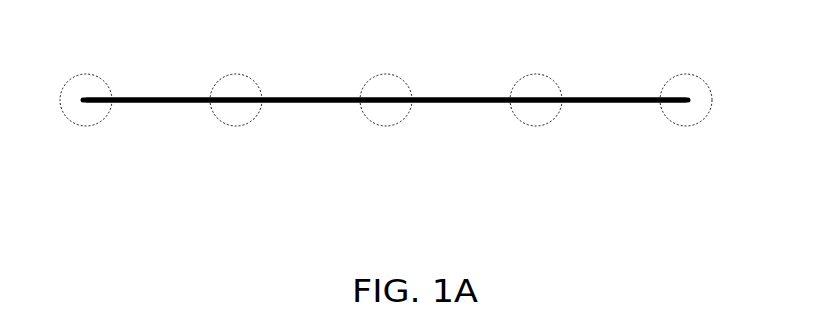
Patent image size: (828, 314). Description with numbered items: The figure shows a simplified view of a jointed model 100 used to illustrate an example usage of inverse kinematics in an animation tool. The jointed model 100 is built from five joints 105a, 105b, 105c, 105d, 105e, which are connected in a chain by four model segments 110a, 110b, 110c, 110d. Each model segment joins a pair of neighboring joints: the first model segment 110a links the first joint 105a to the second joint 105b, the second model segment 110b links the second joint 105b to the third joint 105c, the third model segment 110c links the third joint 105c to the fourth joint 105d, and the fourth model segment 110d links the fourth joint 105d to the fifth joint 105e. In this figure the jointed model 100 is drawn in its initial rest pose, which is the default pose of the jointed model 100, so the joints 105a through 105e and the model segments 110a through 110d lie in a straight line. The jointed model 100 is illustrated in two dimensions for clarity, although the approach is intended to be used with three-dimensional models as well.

The jointed model 100 is at (385, 168).
The joint 105a is at (86, 127).
The joint 105b is at (242, 126).
The joint 105c is at (390, 126).
The joint 105d is at (538, 126).
The joint 105e is at (692, 125).
The model segment 110a is at (153, 97).
The model segment 110b is at (300, 95).
The model segment 110c is at (458, 95).
The model segment 110d is at (603, 95).